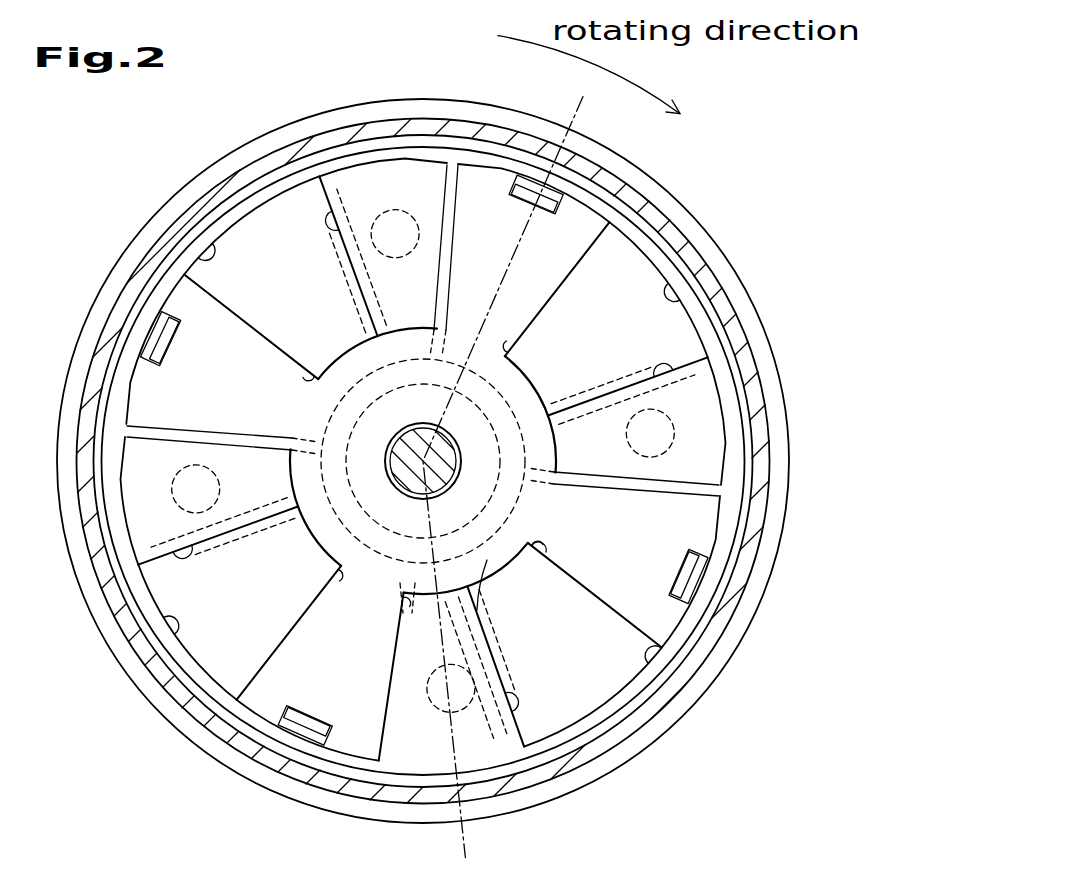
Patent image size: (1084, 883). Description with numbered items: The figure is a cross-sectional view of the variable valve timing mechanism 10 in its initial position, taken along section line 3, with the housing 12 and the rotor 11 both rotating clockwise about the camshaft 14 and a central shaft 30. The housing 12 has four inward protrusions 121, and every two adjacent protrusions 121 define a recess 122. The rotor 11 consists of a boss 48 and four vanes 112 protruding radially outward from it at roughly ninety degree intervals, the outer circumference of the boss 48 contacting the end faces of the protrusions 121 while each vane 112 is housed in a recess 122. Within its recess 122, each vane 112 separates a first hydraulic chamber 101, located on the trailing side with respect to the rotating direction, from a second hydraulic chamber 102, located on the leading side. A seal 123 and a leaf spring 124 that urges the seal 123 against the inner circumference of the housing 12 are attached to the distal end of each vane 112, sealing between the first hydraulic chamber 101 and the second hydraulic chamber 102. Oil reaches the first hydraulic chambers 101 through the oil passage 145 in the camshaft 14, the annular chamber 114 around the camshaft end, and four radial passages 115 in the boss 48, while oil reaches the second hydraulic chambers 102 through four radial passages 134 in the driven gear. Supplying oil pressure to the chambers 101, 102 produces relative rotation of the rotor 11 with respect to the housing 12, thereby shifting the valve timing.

The magneto / rotating electric machine 10 is at (120, 210).
The housing 12 is at (345, 165).
The rotor 11 is at (572, 609).
The shaft 30 is at (421, 440).
The second hydraulic chamber 102 is at (283, 212).
The vane 112 is at (270, 350).
The camshaft 14 is at (353, 315).
The first hydraulic chamber 101 is at (455, 166).
The recess 122 is at (202, 246).
The seal 123 is at (548, 188).
The leaf spring 124 is at (540, 214).
The inward protrusion 121 is at (452, 205).
The passage 134 is at (580, 385).
The passage 115 is at (393, 622).
The oil passage 145 is at (542, 544).
The annular chamber 114 is at (398, 578).
The boss 48 is at (498, 598).
The section line III-III 3 is at (583, 95).